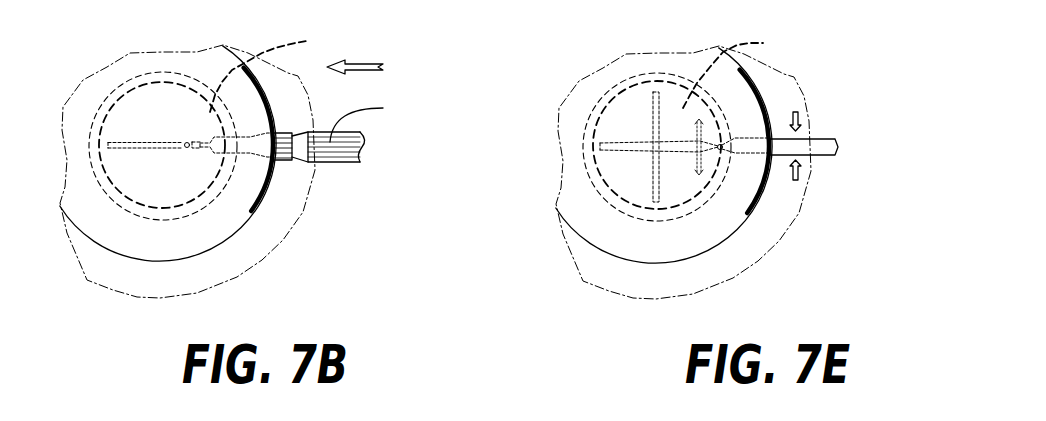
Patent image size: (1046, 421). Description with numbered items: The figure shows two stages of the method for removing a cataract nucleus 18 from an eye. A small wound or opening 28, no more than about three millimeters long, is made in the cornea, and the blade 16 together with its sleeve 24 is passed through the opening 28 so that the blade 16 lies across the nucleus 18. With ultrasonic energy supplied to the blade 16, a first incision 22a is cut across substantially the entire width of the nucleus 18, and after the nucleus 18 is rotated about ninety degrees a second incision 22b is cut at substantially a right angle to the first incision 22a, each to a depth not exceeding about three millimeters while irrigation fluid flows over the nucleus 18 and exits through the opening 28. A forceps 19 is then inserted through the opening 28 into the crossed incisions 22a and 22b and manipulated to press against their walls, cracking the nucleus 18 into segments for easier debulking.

In FIG. 7B, the blade 16 is at (197, 168).
In FIG. 7B, the nucleus 18 is at (272, 67).
In FIG. 7E, the nucleus 18 is at (740, 68).
In FIG. 7E, the forceps 19 is at (804, 139).
In FIG. 7E, the first incision 22a is at (655, 114).
In FIG. 7E, the second incision 22b is at (637, 144).
In FIG. 7B, the sleeve 24 is at (352, 138).
In FIG. 7B, the opening 28 is at (280, 177).
In FIG. 7E, the opening 28 is at (772, 183).